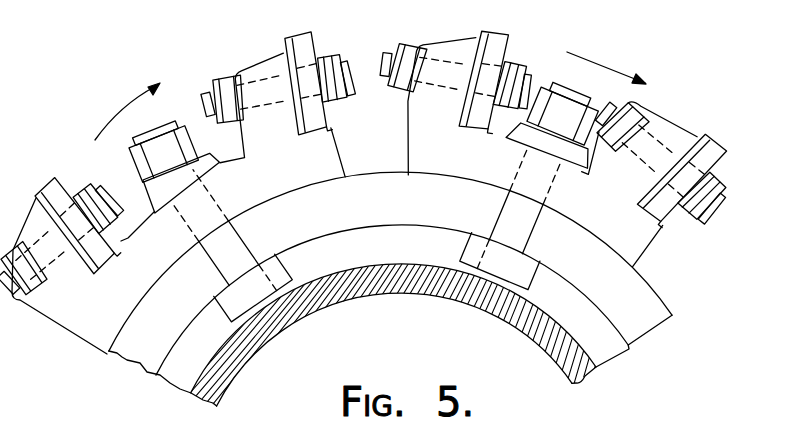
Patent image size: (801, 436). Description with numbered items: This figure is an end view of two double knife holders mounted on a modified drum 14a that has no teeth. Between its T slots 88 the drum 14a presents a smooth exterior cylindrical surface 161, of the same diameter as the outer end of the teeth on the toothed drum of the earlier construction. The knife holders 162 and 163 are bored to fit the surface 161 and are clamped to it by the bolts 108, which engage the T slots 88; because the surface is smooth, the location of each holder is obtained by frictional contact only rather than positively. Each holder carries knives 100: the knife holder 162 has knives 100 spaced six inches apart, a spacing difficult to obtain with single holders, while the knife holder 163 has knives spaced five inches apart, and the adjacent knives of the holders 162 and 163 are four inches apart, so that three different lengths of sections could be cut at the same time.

The knives 100 is at (387, 182).
The smooth exterior cylindrical surface 161 is at (367, 172).
The knife holder 162 is at (284, 115).
The knife holder 163 is at (452, 104).
The bolts 108 is at (243, 235).
The T slots 88 is at (393, 314).
The drum 14a is at (477, 317).